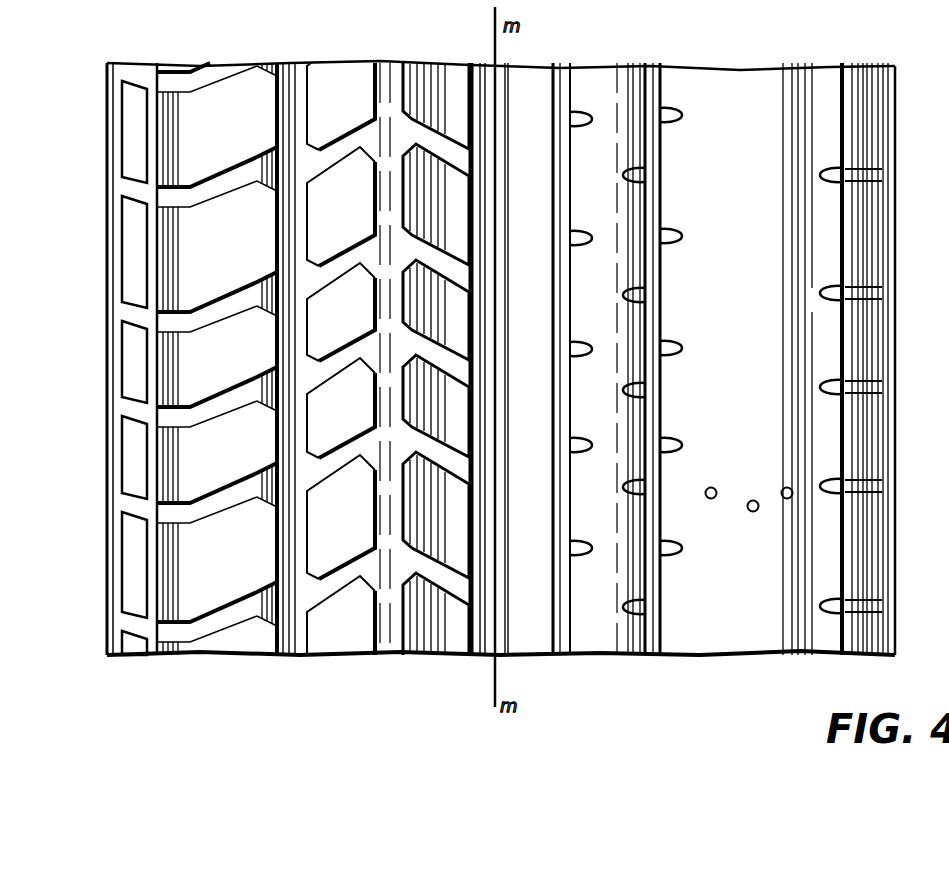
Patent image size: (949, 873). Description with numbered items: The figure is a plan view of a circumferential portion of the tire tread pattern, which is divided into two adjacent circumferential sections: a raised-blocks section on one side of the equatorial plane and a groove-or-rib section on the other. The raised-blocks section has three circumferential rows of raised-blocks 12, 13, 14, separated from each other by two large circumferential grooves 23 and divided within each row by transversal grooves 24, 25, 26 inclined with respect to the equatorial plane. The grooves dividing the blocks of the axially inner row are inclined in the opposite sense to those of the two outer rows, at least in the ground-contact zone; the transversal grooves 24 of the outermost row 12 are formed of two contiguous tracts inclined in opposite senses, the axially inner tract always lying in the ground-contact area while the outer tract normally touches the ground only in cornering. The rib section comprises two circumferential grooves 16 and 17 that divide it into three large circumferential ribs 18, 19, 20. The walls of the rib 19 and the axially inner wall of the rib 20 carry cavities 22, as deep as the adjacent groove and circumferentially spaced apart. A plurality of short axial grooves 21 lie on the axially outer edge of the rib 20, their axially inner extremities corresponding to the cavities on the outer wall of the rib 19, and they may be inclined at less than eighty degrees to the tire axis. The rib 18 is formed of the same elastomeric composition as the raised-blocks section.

The row of raised-blocks 12 is at (171, 359).
The row of raised-blocks 13 is at (341, 376).
The row of raised-blocks 14 is at (432, 630).
The circumferential groove 16 is at (637, 375).
The circumferential groove 17 is at (655, 643).
The circumferential rib 18 is at (523, 632).
The circumferential rib 19 is at (605, 633).
The circumferential rib 20 is at (737, 635).
The short axial grooves 21 is at (862, 384).
The cavities 22 is at (583, 238).
The large circumferential grooves 23 is at (292, 84).
The transversal grooves 24 is at (172, 513).
The transversal grooves 25 is at (338, 365).
The transversal grooves 26 is at (471, 282).